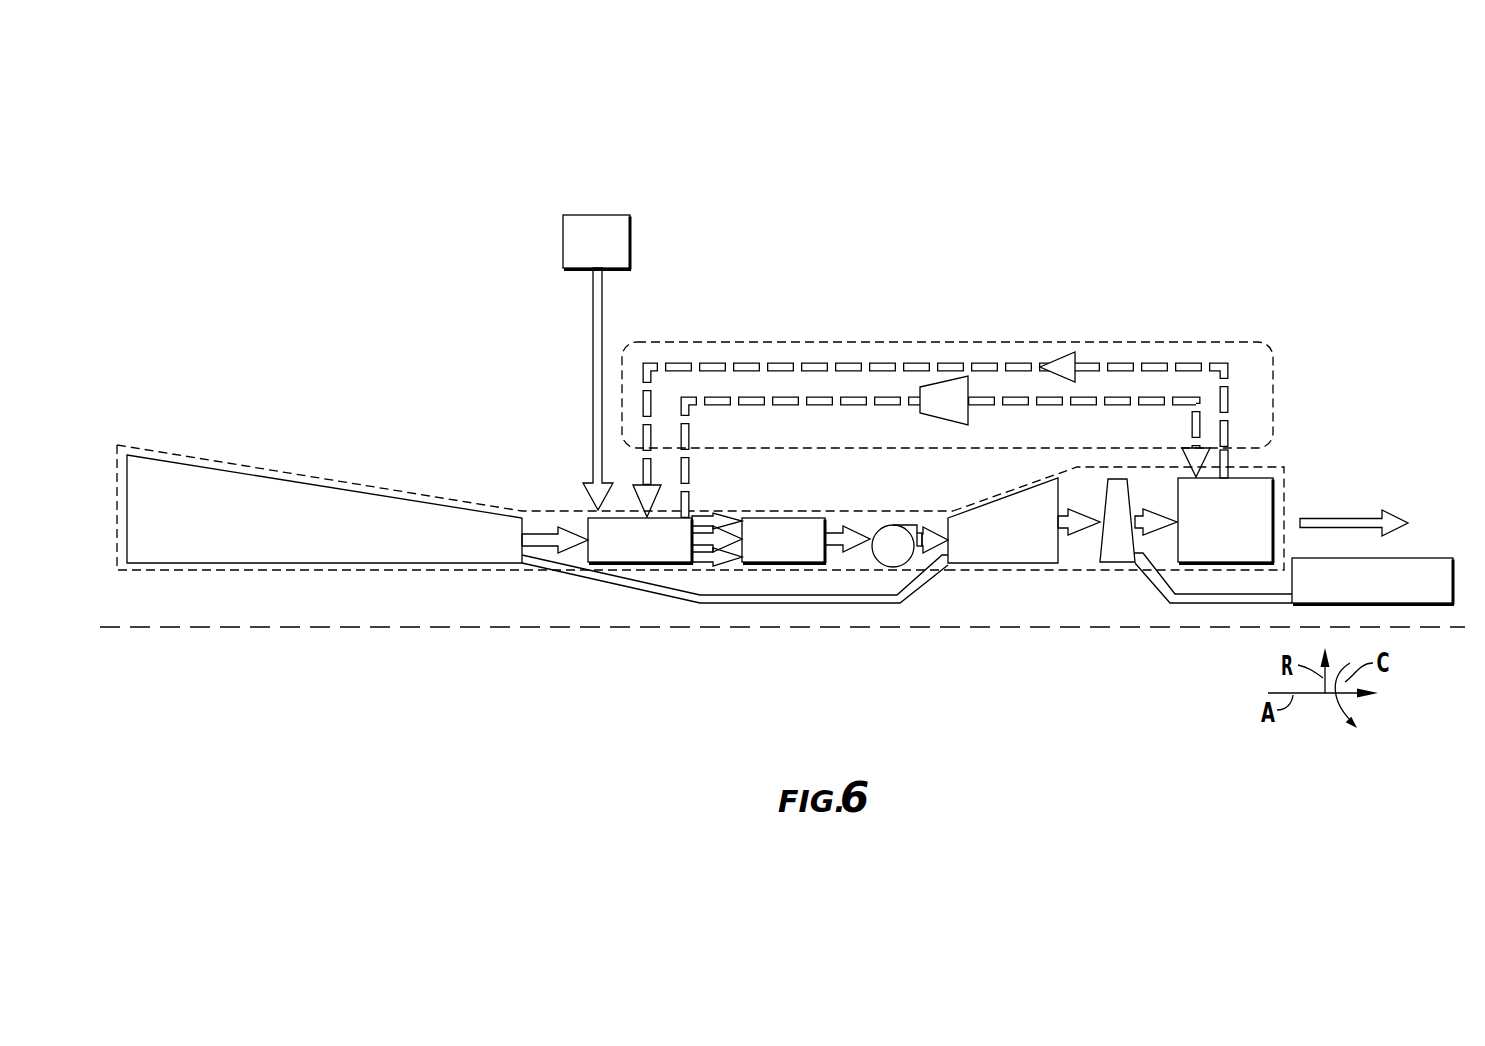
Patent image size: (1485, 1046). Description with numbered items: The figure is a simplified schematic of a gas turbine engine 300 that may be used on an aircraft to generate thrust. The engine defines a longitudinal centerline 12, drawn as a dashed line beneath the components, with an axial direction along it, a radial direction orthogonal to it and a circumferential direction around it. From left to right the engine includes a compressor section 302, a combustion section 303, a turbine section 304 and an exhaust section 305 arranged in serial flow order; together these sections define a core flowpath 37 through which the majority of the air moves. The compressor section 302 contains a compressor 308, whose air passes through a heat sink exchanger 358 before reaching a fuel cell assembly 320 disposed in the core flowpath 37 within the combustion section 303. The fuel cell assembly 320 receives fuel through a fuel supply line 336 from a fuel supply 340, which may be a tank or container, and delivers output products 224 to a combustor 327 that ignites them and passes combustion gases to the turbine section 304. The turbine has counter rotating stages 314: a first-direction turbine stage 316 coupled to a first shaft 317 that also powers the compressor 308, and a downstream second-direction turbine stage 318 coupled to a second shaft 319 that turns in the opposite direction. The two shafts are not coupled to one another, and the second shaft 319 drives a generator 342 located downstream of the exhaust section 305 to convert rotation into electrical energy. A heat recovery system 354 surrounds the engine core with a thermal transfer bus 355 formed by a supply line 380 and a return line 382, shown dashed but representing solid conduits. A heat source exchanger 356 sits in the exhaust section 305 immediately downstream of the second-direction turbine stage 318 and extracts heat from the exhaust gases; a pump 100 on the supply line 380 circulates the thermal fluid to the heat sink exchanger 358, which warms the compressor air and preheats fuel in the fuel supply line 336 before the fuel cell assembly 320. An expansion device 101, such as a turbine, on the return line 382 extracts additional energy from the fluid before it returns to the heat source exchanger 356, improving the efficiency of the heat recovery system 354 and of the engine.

The longitudinal centerline 12 is at (205, 629).
The core flowpath 37 is at (283, 470).
The pump 100 is at (1058, 350).
The expansion device 101 is at (933, 409).
The output products 224 is at (840, 530).
The gas turbine engine 300 is at (1357, 168).
The compressor section 302 is at (535, 439).
The combustion section 303 is at (735, 622).
The turbine section 304 is at (1003, 588).
The exhaust section 305 is at (1290, 488).
The compressor 308 is at (246, 535).
The counter rotating stages 314 is at (1003, 520).
The first-direction turbine stage 316 is at (985, 545).
The first shaft 317 is at (745, 598).
The second-direction turbine stage 318 is at (1122, 548).
The second shaft 319 is at (1212, 600).
The fuel cell assembly 320 is at (765, 553).
The combustor 327 is at (898, 525).
The fuel supply line 336 is at (595, 343).
The fuel supply 340 is at (579, 257).
The generator 342 is at (1437, 565).
The heat recovery system 354 is at (1206, 305).
The thermal transfer bus 355 is at (1275, 360).
The heat source exchanger 356 is at (1207, 533).
The heat sink exchanger 358 is at (622, 553).
The supply line 380 is at (912, 365).
The return line 382 is at (762, 397).